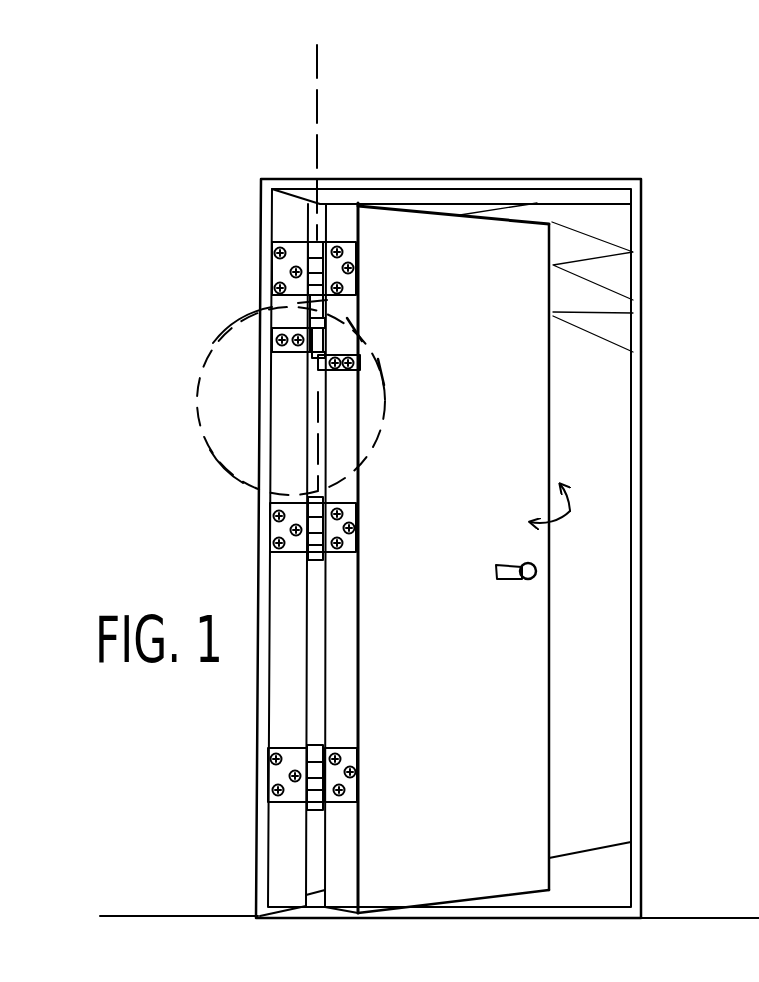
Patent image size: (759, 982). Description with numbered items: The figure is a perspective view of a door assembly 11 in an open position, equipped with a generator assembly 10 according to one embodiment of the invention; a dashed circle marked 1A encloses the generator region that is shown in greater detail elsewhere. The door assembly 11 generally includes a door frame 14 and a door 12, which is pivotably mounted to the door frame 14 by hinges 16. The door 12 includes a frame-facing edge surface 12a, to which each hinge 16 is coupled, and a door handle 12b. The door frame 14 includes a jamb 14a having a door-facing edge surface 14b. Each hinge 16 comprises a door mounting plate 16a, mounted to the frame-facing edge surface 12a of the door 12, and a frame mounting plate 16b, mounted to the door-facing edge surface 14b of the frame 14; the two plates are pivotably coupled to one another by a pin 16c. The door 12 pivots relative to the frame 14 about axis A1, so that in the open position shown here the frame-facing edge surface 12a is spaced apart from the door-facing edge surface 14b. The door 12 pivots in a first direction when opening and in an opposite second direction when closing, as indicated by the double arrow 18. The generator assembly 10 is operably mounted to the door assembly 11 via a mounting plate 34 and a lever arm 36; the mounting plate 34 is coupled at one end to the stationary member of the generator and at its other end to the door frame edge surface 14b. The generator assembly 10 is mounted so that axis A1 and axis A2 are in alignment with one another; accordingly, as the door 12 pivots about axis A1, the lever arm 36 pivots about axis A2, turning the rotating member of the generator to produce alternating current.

The generator assembly 10 is at (403, 365).
The door assembly 11 is at (665, 165).
The door 12 is at (541, 296).
The frame-facing edge surface 12a is at (340, 692).
The door handle 12b is at (535, 588).
The door frame 14 is at (309, 174).
The jamb 14a is at (275, 213).
The door-facing edge surface 14b is at (285, 580).
The hinge 16 is at (391, 485).
The door mounting plate 16a is at (350, 755).
The frame mounting plate 16b is at (275, 778).
The pin 16c is at (318, 746).
The double arrow 18 is at (570, 511).
The mounting plate 34 is at (277, 323).
The lever arm 36 is at (360, 393).
The axis A1 is at (316, 70).
The axis A2 is at (300, 413).
The detail view reference 1A is at (237, 320).